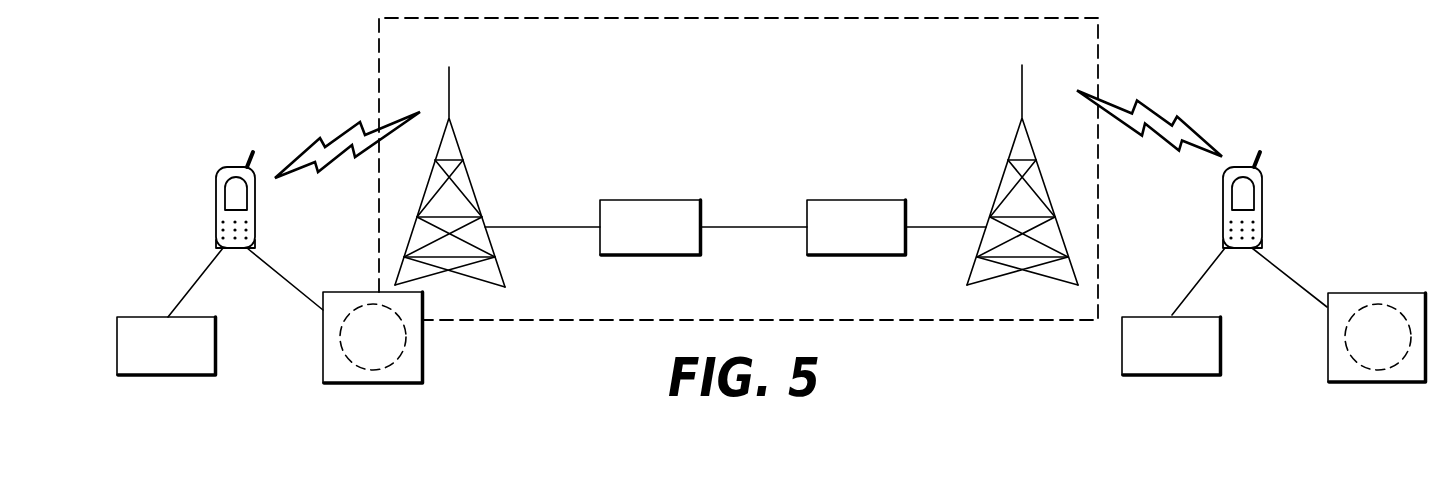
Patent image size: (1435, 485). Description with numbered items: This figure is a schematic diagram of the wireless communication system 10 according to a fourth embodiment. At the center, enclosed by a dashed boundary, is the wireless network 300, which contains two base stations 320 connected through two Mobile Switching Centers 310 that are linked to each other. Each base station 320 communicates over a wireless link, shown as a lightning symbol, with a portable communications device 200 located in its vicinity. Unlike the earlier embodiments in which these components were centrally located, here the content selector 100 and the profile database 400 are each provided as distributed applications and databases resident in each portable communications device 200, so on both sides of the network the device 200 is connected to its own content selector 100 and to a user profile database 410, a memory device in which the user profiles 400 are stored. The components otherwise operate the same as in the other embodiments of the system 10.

The wireless communication system 10 is at (1208, 88).
The content selector 100 is at (669, 346).
The portable communications device 200 is at (228, 167).
The wireless network 300 is at (1098, 43).
The Mobile Switching Center 310 is at (735, 227).
The base station 320 is at (465, 148).
The profile database 400 is at (875, 337).
The user profile database 410 is at (323, 338).